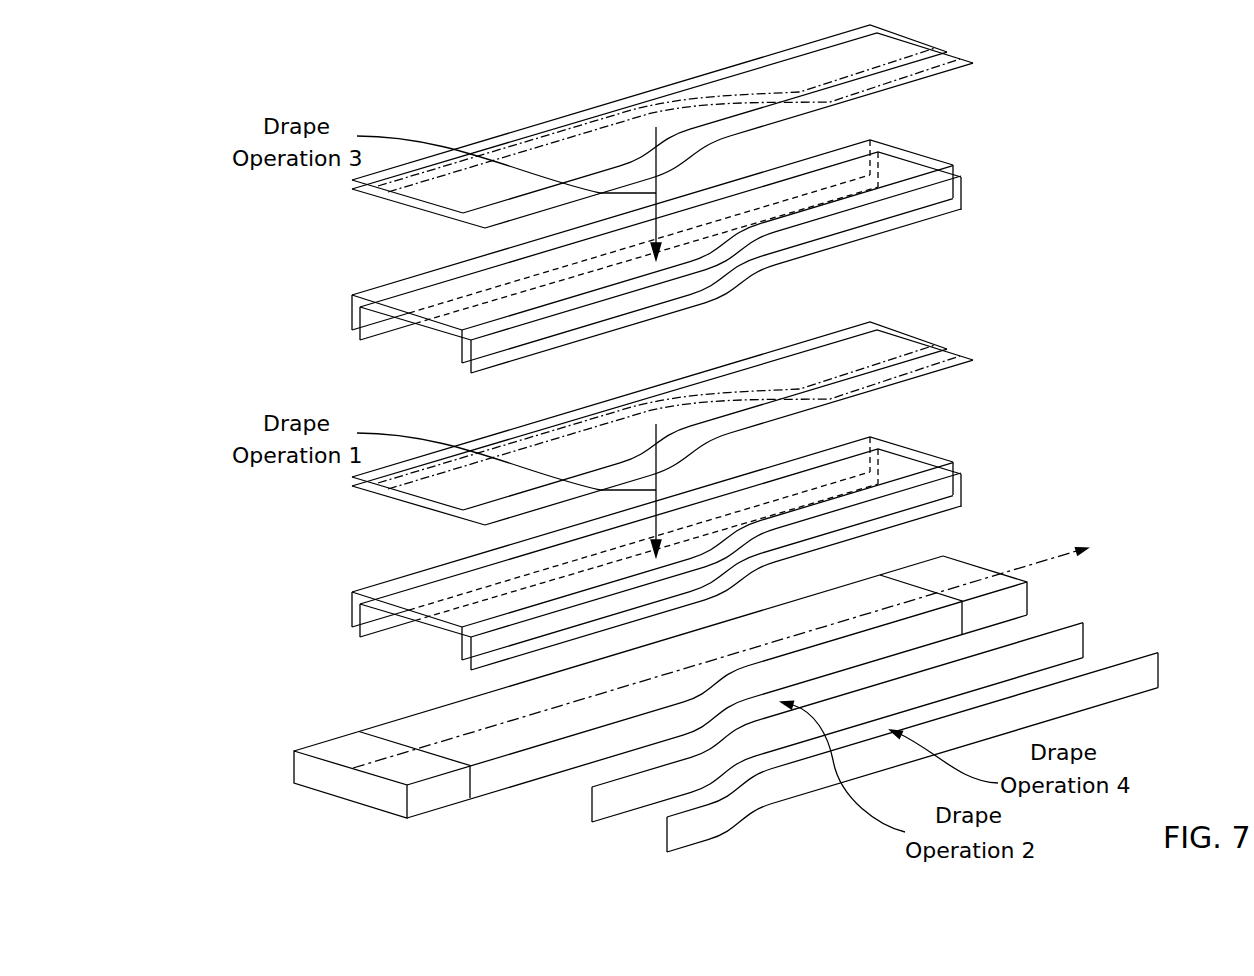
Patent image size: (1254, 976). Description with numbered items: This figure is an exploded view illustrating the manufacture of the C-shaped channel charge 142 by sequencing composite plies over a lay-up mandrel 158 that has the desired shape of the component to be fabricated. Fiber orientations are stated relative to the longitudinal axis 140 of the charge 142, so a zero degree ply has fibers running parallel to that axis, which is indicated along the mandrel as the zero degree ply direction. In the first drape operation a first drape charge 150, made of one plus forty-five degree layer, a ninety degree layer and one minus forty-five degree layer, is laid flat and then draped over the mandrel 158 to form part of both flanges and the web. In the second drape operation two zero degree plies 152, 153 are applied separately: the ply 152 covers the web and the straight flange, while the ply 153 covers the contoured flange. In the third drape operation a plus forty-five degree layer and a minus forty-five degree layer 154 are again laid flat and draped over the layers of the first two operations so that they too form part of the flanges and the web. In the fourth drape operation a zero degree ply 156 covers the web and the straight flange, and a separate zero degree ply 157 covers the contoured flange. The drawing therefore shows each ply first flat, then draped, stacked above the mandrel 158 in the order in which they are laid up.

The axis 140 is at (1040, 561).
The C-shaped channel charge 142 is at (415, 715).
The first drape charge 150 is at (973, 360).
The zero degree ply 152 is at (947, 349).
The zero degree ply 153 is at (1083, 643).
The plus 45 degree and minus 45 degree layer 154 is at (973, 63).
The zero degree ply 156 is at (947, 52).
The zero degree ply 157 is at (1158, 672).
The lay-up mandrel 158 is at (323, 741).